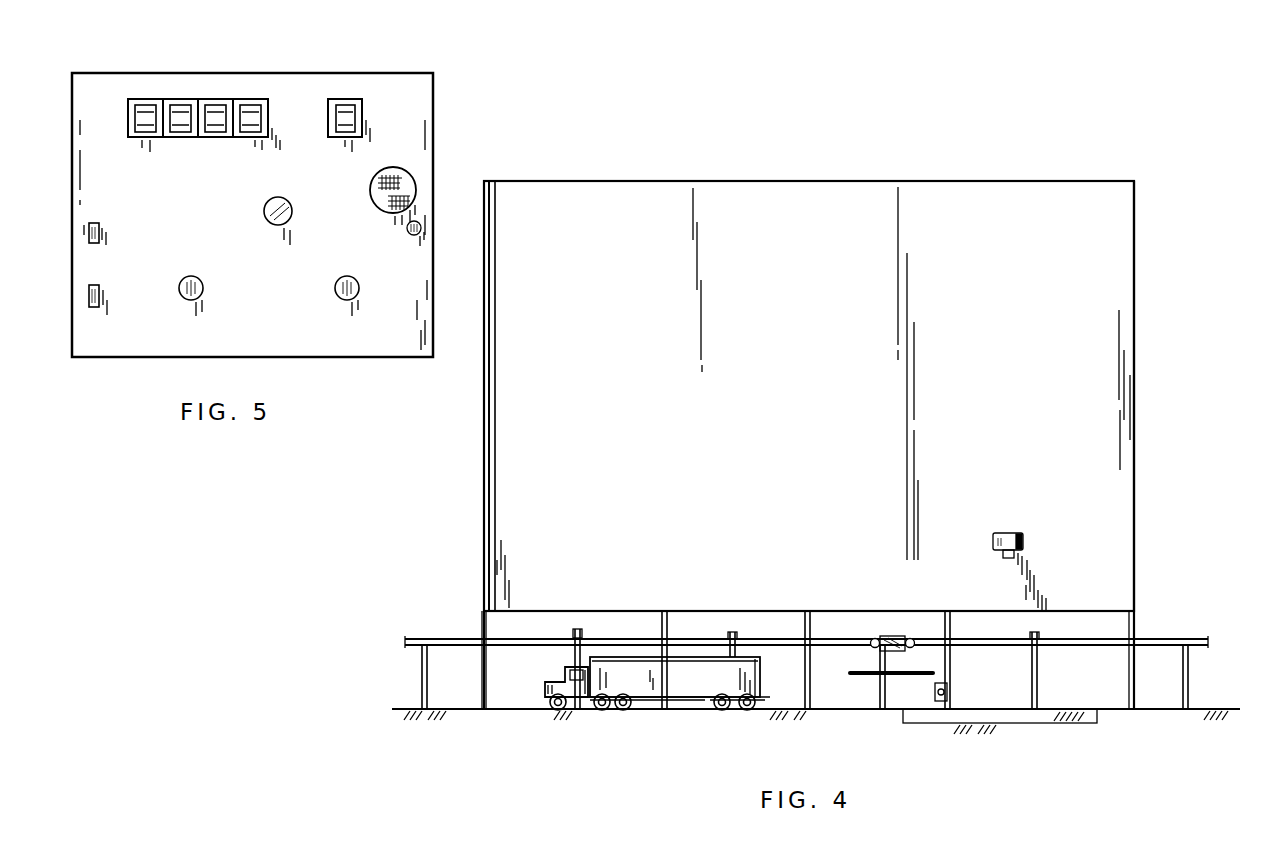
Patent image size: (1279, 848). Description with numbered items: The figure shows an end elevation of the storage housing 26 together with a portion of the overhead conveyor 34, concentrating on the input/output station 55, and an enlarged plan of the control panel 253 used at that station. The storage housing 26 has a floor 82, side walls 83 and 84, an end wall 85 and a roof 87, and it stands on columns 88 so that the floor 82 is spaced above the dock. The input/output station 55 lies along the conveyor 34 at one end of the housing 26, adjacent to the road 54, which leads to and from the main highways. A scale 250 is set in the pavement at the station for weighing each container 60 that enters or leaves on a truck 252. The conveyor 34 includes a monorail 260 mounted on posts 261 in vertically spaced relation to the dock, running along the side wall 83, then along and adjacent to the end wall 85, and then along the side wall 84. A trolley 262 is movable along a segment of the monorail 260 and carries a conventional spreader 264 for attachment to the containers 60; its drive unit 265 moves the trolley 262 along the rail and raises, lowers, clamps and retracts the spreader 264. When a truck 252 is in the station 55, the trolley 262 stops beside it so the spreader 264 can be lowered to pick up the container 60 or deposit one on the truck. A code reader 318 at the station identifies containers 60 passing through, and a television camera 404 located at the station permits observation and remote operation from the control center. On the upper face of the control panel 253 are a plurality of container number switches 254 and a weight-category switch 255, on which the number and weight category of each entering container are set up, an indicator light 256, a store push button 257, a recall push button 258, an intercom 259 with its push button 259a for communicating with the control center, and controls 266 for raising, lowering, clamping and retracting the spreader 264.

In FIG. 5, the storage housing 26 is at (483, 195).
In FIG. 4, the conveyor 34 is at (408, 637).
In FIG. 4, the road 54 is at (402, 709).
In FIG. 4, the input/output station 55 is at (961, 644).
In FIG. 4, the container 60 is at (668, 682).
In FIG. 4, the floor 82 is at (513, 614).
In FIG. 4, the side wall 83 is at (1137, 422).
In FIG. 4, the side wall 84 is at (484, 378).
In FIG. 4, the end wall 85 is at (812, 348).
In FIG. 4, the roof 87 is at (826, 182).
In FIG. 4, the column 88 is at (490, 676).
In FIG. 4, the scale 250 is at (1077, 723).
In FIG. 4, the truck 252 is at (572, 708).
In FIG. 5, the control panel 253 is at (273, 78).
In FIG. 4, the control panel 253 is at (948, 686).
In FIG. 5, the container number switches 254 is at (130, 100).
In FIG. 5, the weight-category switch 255 is at (345, 99).
In FIG. 5, the indicator light 256 is at (286, 224).
In FIG. 5, the store push button 257 is at (197, 280).
In FIG. 5, the recall push button 258 is at (335, 290).
In FIG. 5, the intercom 259 is at (410, 182).
In FIG. 5, the push button 259a is at (407, 230).
In FIG. 4, the monorail 260 is at (763, 639).
In FIG. 4, the posts 261 is at (427, 668).
In FIG. 4, the trolley 262 is at (890, 636).
In FIG. 4, the spreader 264 is at (858, 676).
In FIG. 4, the drive unit 265 is at (873, 637).
In FIG. 5, the controls 266 is at (100, 243).
In FIG. 4, the code reader 318 is at (948, 696).
In FIG. 4, the television camera 404 is at (1013, 533).